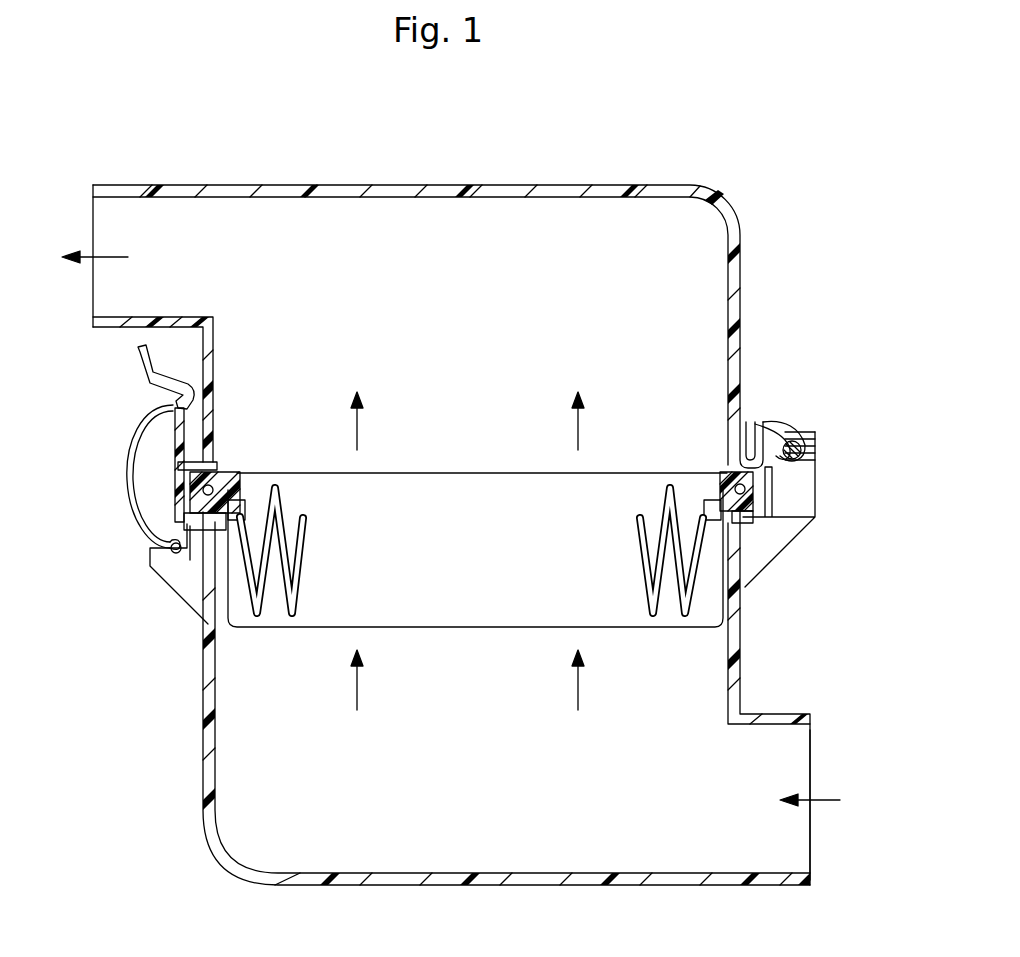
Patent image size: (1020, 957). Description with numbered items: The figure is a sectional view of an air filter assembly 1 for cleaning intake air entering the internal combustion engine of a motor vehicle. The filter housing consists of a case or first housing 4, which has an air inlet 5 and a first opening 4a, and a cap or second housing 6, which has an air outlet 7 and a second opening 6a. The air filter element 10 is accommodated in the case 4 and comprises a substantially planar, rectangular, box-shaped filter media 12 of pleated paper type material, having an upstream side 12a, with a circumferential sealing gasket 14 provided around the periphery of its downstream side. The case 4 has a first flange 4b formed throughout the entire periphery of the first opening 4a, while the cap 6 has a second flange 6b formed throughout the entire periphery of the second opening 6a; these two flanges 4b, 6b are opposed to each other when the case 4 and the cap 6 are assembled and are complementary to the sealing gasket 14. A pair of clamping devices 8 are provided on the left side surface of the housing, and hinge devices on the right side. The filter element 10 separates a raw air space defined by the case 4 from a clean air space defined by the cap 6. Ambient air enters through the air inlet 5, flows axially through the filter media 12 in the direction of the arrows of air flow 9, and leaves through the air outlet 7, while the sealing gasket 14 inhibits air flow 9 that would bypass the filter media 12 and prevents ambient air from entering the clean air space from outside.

The air filter assembly 1 is at (432, 164).
The case or first housing 4 is at (744, 656).
The first opening 4a is at (234, 541).
The first flange 4b is at (760, 503).
The air inlet 5 is at (812, 841).
The cap or second housing 6 is at (740, 271).
The second opening 6a is at (210, 471).
The second flange 6b is at (214, 432).
The air outlet 7 is at (93, 220).
The clamping devices 8 is at (123, 449).
The air flow 9 is at (120, 257).
The air filter element 10 is at (447, 471).
The filter media 12 is at (484, 615).
The upstream side 12a is at (503, 471).
The sealing gasket 14 is at (724, 472).